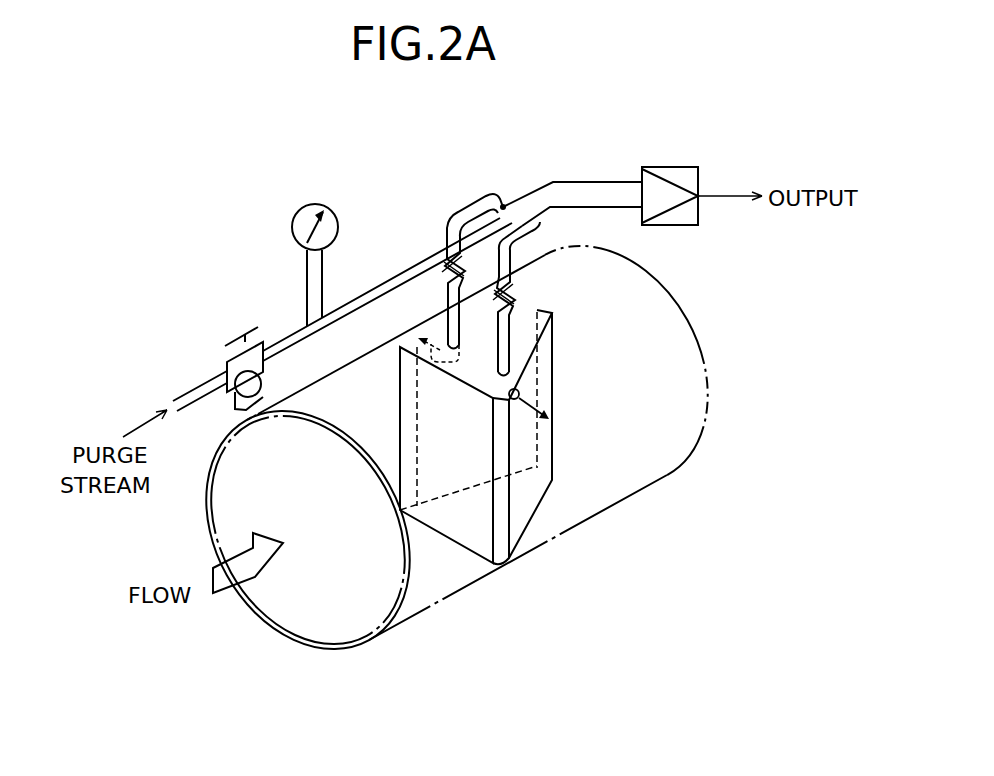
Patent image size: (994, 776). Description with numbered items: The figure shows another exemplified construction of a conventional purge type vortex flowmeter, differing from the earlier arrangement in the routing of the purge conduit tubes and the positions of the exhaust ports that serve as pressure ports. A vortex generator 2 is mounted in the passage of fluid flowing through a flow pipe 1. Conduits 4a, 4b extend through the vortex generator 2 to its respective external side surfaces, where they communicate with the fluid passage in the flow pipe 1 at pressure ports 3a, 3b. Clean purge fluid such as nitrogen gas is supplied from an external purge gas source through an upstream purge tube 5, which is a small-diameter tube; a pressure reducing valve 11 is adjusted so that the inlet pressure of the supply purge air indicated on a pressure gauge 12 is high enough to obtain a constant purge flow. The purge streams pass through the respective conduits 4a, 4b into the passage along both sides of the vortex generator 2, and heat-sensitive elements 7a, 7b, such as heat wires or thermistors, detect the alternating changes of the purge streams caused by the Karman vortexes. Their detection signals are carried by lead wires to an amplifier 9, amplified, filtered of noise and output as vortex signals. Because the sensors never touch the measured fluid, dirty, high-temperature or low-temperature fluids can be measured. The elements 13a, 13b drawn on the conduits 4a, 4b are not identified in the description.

The flow pipe 1 is at (560, 537).
The vortex generator 2 is at (551, 480).
The pressure port 3a is at (437, 323).
The pressure port 3b is at (520, 396).
The conduit 4a is at (448, 302).
The conduit 4b is at (503, 339).
The upstream purge tube 5 is at (363, 296).
The heat-sensitive element 7a is at (491, 203).
The heat-sensitive element 7b is at (541, 234).
The amplifier 9 is at (679, 167).
The pressure reducing valve 11 is at (232, 363).
The pressure gauge 12 is at (292, 217).
The upstream flow restrictor 13a is at (443, 262).
The downstream flow restrictor 13b is at (512, 283).